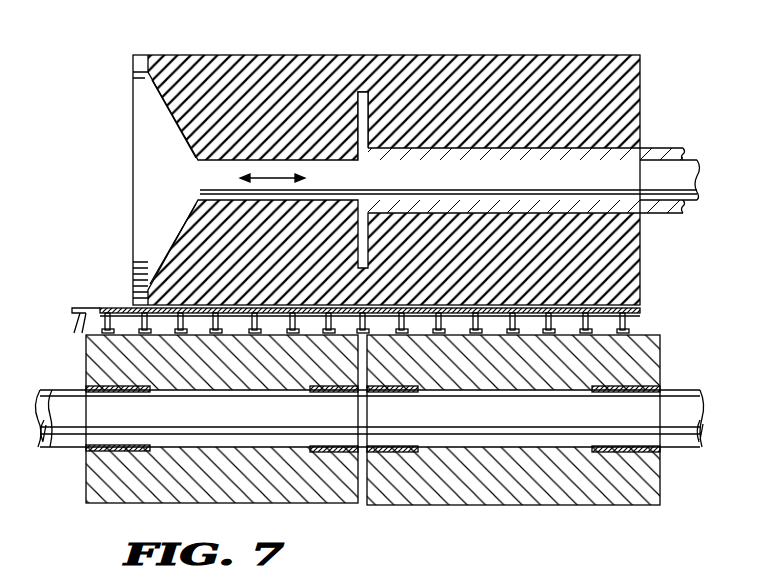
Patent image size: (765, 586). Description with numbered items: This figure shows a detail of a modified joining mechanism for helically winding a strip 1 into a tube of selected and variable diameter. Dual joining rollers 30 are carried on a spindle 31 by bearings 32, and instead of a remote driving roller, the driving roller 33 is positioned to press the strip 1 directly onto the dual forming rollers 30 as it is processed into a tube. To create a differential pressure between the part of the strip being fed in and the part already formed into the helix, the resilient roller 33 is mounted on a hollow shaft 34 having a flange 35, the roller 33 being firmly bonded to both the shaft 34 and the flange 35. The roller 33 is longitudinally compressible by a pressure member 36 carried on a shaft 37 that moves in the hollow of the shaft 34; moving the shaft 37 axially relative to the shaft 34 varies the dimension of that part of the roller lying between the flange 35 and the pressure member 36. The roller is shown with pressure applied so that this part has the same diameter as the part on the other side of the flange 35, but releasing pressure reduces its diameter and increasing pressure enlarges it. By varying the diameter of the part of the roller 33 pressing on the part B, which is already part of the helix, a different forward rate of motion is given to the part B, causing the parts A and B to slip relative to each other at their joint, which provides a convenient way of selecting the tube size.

The strip 1 is at (143, 313).
The dual joining rollers 30 is at (204, 493).
The spindle 31 is at (344, 420).
The bearings 32 is at (110, 452).
The driving roller 33 is at (606, 56).
The hollow shaft 34 is at (661, 152).
The flange 35 is at (362, 90).
The pressure member 36 is at (184, 182).
The shaft 37 is at (686, 208).
The part A of the strip A is at (612, 326).
The part B of the strip B is at (116, 308).